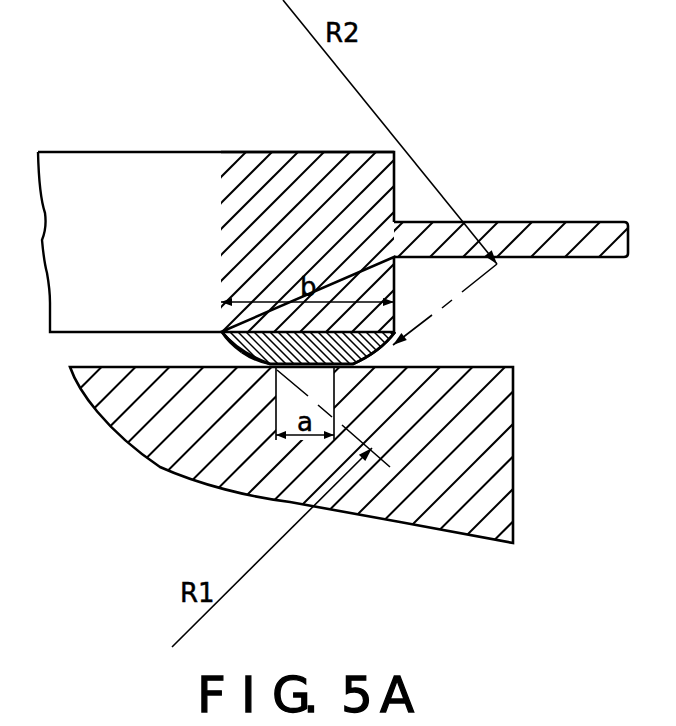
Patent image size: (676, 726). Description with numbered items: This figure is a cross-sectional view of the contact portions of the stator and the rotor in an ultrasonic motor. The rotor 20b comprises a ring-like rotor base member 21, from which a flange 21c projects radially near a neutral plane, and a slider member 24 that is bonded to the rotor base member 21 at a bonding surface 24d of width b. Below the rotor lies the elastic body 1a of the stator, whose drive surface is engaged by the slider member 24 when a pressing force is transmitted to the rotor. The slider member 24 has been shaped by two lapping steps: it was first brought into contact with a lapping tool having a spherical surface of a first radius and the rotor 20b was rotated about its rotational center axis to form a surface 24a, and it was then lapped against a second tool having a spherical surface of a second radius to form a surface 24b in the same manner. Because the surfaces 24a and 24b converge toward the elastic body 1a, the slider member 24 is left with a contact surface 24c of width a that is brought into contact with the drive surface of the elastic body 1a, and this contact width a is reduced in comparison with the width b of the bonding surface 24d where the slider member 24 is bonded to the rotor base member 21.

The rotor 20b is at (425, 157).
The rotor base member 21 is at (395, 208).
The flange 21c is at (562, 220).
The slider member 24 is at (395, 343).
The surface 24a is at (240, 345).
The surface 24b is at (372, 354).
The contact surface 24c is at (270, 411).
The bonding surface 24d is at (233, 337).
The elastic body 1a is at (513, 440).